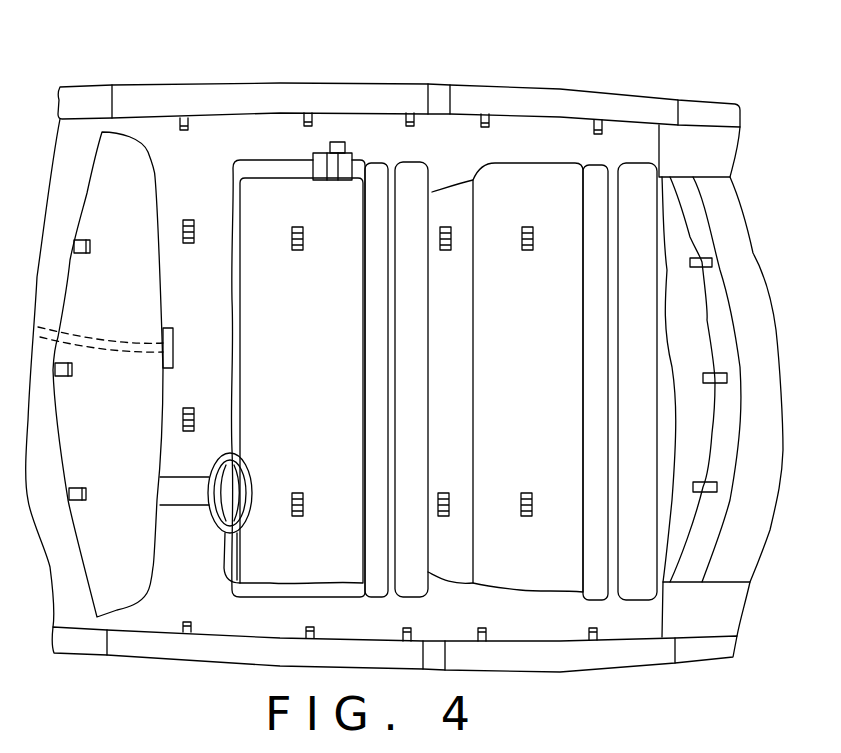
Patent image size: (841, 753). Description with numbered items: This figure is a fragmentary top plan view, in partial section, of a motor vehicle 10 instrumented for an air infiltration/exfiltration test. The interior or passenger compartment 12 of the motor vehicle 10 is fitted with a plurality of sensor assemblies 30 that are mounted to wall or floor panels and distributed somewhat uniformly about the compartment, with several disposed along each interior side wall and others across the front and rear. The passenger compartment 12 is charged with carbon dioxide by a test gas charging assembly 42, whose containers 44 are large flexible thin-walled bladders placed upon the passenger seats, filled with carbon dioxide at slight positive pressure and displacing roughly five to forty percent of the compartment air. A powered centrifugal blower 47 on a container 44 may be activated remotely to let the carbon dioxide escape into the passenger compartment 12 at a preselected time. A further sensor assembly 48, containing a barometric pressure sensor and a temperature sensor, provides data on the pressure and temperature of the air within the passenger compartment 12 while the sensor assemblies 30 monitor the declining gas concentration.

The motor vehicle 10 is at (180, 66).
The passenger compartment 12 is at (458, 156).
The sensor assemblies 30 is at (490, 108).
The test gas charging assembly 42 is at (279, 162).
The containers 44 is at (316, 372).
The powered centrifugal blower 47 is at (333, 172).
The sensor assembly 48 is at (176, 341).